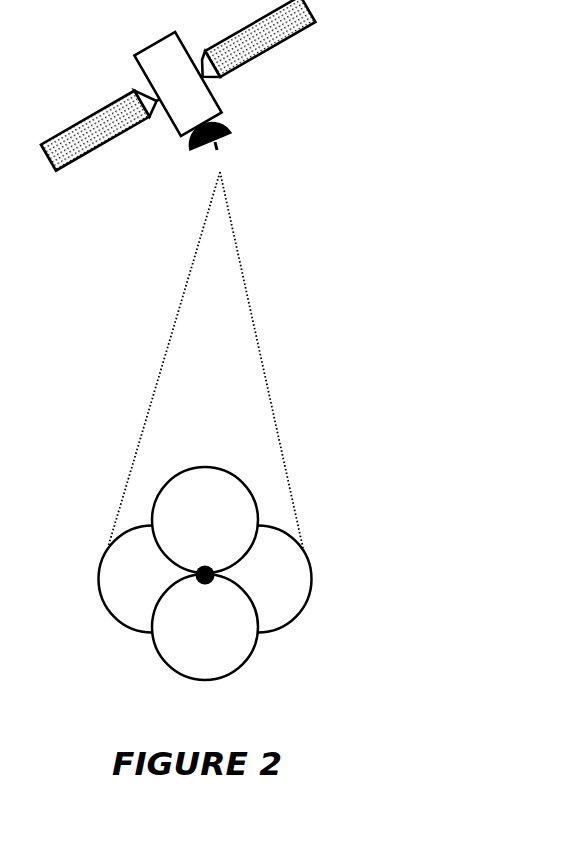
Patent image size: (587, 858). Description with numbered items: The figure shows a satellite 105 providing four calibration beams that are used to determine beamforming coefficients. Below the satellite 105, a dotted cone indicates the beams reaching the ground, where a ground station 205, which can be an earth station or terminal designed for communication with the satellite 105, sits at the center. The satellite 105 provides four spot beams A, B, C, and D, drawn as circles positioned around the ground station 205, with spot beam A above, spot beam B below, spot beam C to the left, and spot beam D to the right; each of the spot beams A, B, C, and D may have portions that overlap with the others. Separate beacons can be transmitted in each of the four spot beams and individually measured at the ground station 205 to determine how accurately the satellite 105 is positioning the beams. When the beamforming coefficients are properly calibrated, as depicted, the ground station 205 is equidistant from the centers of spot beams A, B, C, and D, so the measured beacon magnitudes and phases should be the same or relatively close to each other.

The satellite 105 is at (158, 38).
The ground station 205 is at (213, 567).
The spot beam A is at (205, 520).
The spot beam B is at (205, 627).
The spot beam C is at (152, 579).
The spot beam D is at (258, 579).